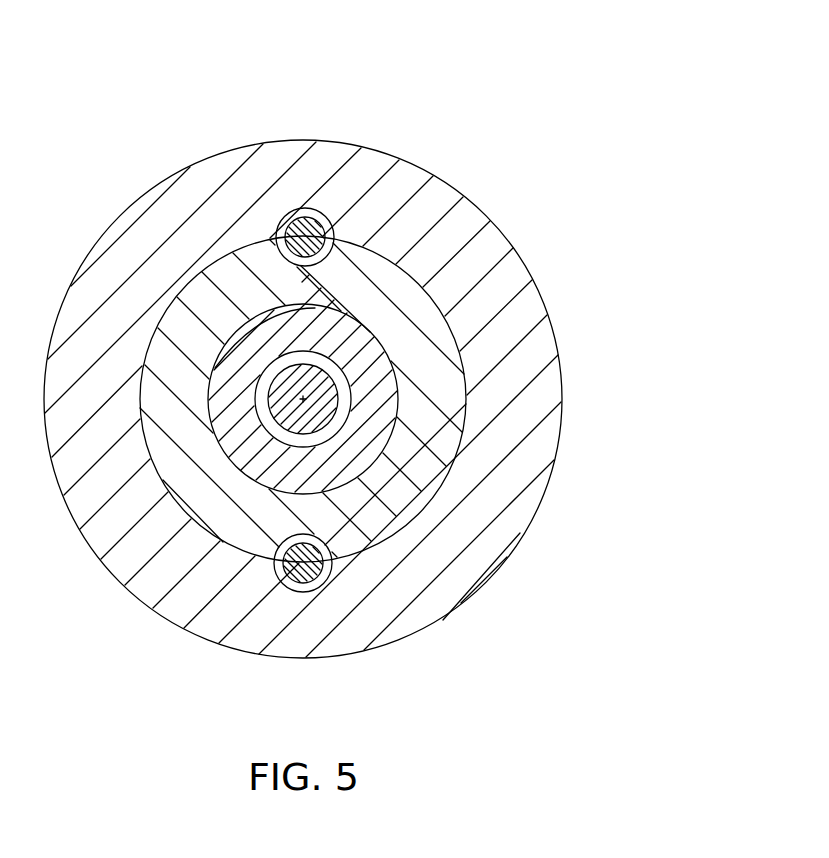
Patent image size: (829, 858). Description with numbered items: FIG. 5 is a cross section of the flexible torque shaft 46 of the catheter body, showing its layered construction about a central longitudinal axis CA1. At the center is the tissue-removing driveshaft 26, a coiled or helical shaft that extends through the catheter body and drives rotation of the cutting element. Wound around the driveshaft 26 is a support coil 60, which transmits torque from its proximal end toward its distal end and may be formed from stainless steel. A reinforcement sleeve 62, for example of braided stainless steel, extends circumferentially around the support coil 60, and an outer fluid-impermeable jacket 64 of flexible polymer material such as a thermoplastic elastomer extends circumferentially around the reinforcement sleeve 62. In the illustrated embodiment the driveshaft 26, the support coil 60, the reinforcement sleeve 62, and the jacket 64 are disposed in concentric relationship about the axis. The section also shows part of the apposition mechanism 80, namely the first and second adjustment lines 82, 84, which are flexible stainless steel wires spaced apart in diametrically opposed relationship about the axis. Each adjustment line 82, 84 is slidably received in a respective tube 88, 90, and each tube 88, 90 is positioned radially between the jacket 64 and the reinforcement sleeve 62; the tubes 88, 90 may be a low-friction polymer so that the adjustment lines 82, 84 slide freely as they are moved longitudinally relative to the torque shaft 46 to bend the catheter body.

The torque shaft 46 is at (337, 383).
The outer fluid-impermeable jacket 64 is at (497, 523).
The reinforcement sleeve 62 is at (325, 403).
The apposition mechanism 80 is at (335, 238).
The support coil 60 is at (357, 443).
The tissue-removing driveshaft 26 is at (318, 410).
The central axis CA1 is at (303, 397).
The tube 88 is at (285, 220).
The first adjustment line 82 is at (308, 208).
The tube 90 is at (284, 583).
The second adjustment line 84 is at (321, 586).